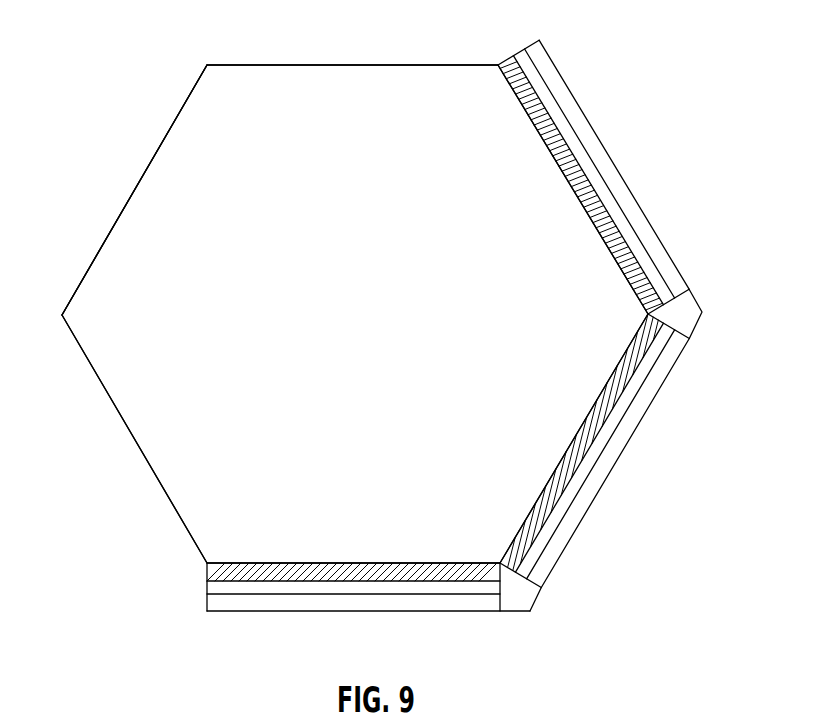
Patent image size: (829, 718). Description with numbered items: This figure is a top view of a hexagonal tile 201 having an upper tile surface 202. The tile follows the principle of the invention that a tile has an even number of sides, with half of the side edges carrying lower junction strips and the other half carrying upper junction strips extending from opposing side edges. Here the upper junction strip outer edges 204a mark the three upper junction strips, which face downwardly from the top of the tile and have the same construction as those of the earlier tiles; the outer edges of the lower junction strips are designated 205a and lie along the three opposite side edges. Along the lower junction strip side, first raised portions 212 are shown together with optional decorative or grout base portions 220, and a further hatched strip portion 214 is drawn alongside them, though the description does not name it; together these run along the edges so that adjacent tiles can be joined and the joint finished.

The hexagonal tile 201 is at (368, 311).
The upper tile surface 202 is at (198, 183).
The upper junction strip outer edges 204a is at (332, 65).
The outer edges of the lower junction strips 205a is at (471, 348).
The first raised portions 212 is at (622, 178).
The hatched inner layer of edge strip 214 is at (514, 54).
The decorative or grout base portions 220 is at (537, 70).